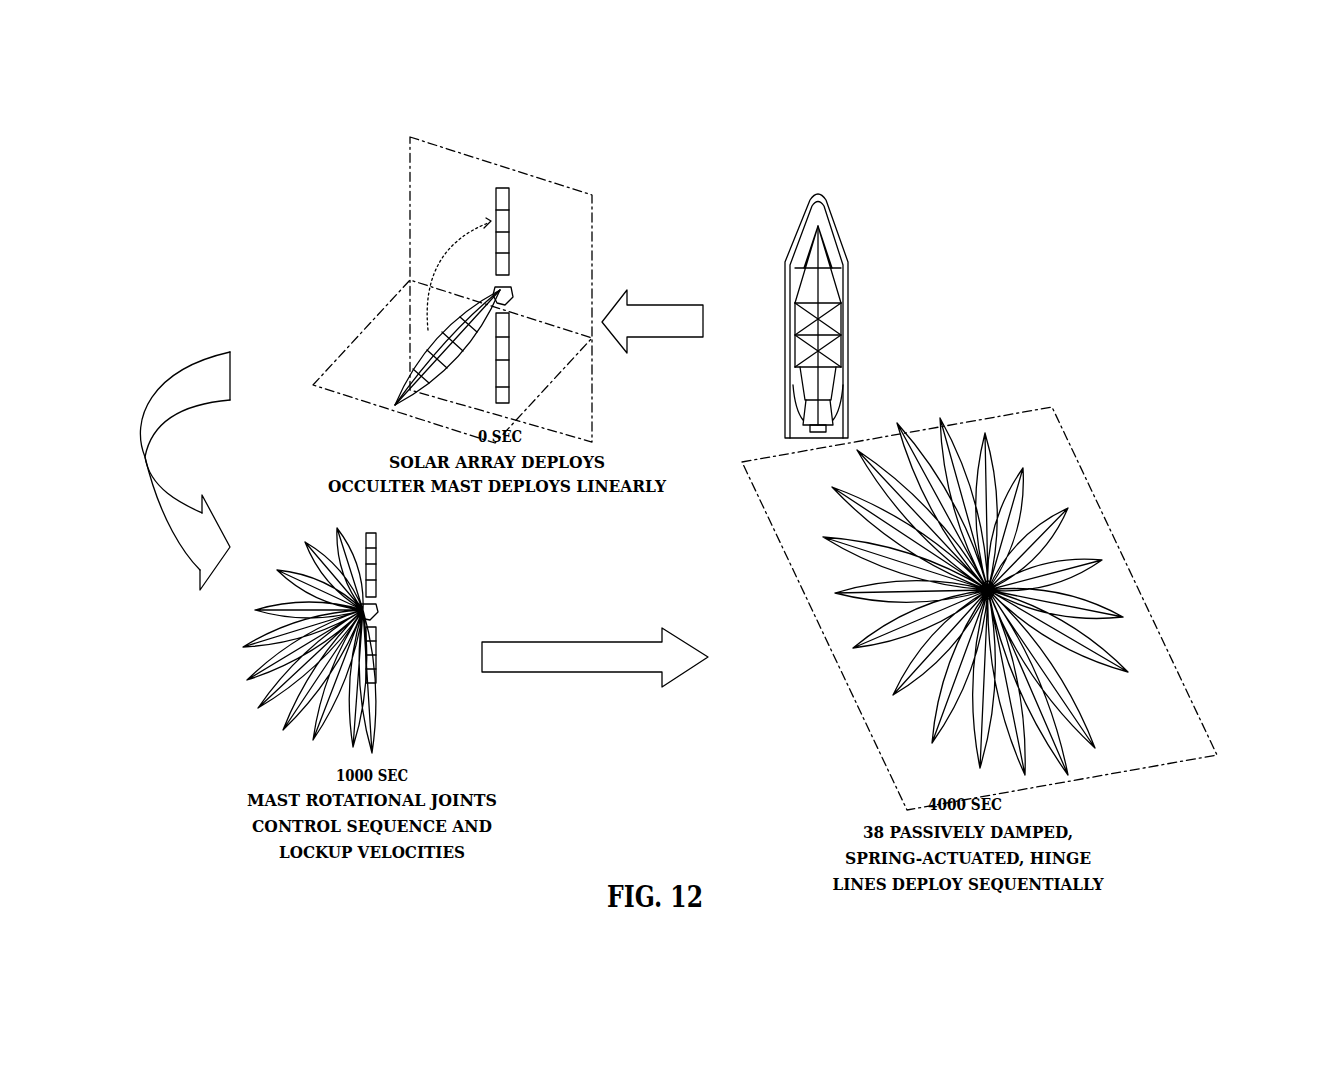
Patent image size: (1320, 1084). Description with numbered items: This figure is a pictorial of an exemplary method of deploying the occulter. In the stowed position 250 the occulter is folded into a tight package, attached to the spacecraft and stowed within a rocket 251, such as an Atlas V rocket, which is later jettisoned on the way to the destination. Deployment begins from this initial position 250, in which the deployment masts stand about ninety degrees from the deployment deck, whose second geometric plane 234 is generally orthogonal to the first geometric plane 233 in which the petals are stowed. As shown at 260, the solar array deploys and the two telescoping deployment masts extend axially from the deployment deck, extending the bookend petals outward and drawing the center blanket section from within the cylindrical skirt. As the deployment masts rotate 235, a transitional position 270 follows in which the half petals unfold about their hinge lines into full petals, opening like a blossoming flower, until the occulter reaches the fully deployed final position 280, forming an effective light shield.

The first geometric plane 233 is at (355, 345).
The second geometric plane 234 is at (435, 163).
The deployment mast rotation 235 is at (453, 253).
The stowed position 250 is at (836, 322).
The rocket 251 is at (850, 268).
The linear mast deployment position 260 is at (535, 301).
The transitional position 270 is at (400, 578).
The deployed position 280 is at (1053, 490).